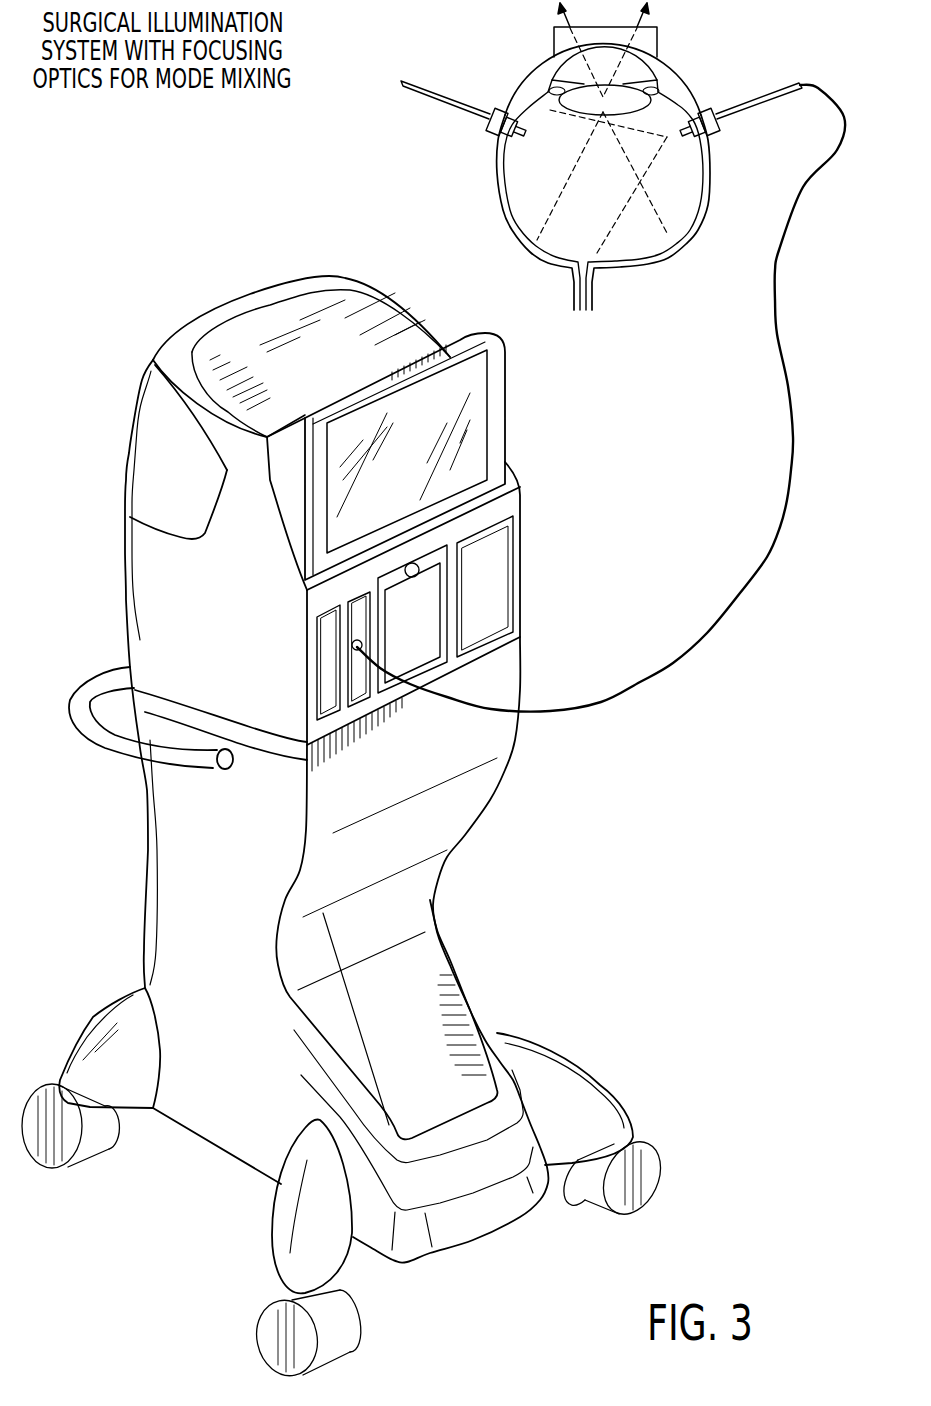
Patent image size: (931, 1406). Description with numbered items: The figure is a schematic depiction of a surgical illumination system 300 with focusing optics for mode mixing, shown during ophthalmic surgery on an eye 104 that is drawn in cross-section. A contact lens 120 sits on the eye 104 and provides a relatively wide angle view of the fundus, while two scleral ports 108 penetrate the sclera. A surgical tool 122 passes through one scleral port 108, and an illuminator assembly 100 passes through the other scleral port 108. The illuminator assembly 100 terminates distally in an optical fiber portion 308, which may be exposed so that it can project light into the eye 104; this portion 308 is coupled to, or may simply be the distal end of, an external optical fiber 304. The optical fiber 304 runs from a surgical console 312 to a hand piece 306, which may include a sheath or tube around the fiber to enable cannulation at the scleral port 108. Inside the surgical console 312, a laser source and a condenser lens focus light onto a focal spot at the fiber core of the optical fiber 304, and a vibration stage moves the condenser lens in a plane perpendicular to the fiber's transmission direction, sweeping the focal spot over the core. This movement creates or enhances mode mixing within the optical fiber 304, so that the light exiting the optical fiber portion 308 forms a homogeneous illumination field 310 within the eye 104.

The illuminator assembly 100 is at (780, 61).
The eye 104 is at (506, 217).
The scleral port 108 is at (493, 135).
The contact lens 120 is at (553, 43).
The surgical tool 122 is at (435, 103).
The surgical illumination system 300 is at (172, 158).
The optical fiber 304 is at (663, 673).
The hand piece 306 is at (773, 103).
The optical fiber portion 308 is at (672, 133).
The homogeneous illumination field 310 is at (617, 227).
The surgical console 312 is at (130, 593).